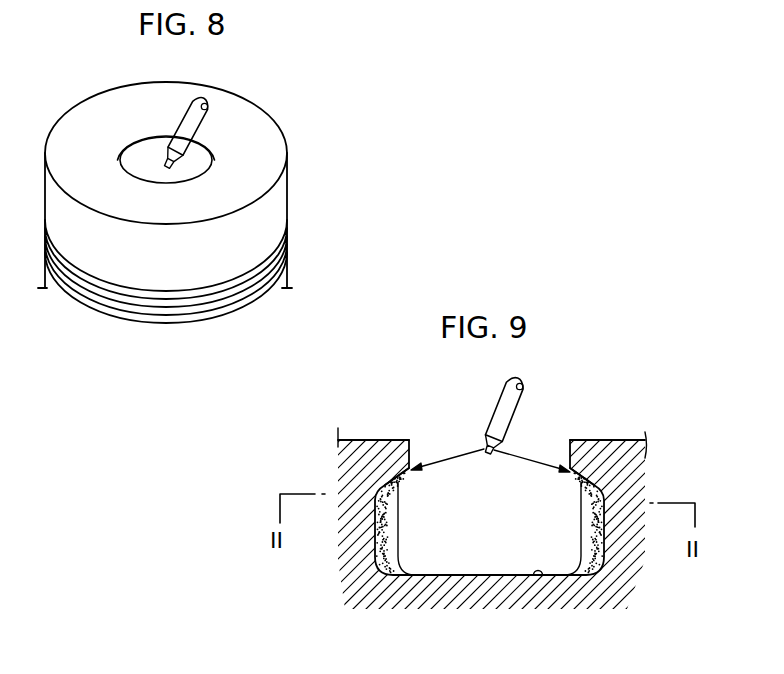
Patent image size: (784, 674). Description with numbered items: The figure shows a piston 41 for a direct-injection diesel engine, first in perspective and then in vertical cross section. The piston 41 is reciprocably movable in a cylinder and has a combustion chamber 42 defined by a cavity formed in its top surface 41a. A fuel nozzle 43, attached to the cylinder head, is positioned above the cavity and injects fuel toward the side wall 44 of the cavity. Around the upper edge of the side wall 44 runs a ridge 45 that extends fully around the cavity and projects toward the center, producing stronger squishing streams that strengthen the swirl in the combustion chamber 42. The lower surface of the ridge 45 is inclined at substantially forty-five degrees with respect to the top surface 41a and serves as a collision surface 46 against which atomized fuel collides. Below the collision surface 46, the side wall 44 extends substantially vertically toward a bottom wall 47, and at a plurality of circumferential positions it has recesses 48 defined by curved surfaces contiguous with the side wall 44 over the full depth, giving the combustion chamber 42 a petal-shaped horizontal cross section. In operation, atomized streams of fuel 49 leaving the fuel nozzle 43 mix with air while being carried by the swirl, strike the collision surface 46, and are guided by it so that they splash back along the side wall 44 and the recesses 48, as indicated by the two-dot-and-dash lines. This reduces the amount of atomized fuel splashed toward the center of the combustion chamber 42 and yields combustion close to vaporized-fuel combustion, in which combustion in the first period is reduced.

In FIG. 8, the piston 41 is at (290, 169).
In FIG. 9, the piston 41 is at (614, 442).
In FIG. 8, the top surface 41a is at (92, 117).
In FIG. 9, the top surface 41a is at (588, 440).
In FIG. 8, the combustion chamber 42 is at (202, 160).
In FIG. 9, the combustion chamber 42 is at (509, 544).
In FIG. 8, the fuel nozzle 43 is at (197, 117).
In FIG. 9, the fuel nozzle 43 is at (499, 395).
In FIG. 9, the side wall 44 is at (400, 533).
In FIG. 8, the ridge 45 is at (145, 134).
In FIG. 9, the ridge 45 is at (411, 462).
In FIG. 9, the collision surface 46 is at (395, 490).
In FIG. 9, the bottom wall 47 is at (538, 578).
In FIG. 9, the recesses 48 is at (377, 551).
In FIG. 9, the atomized streams of fuel 49 is at (458, 456).